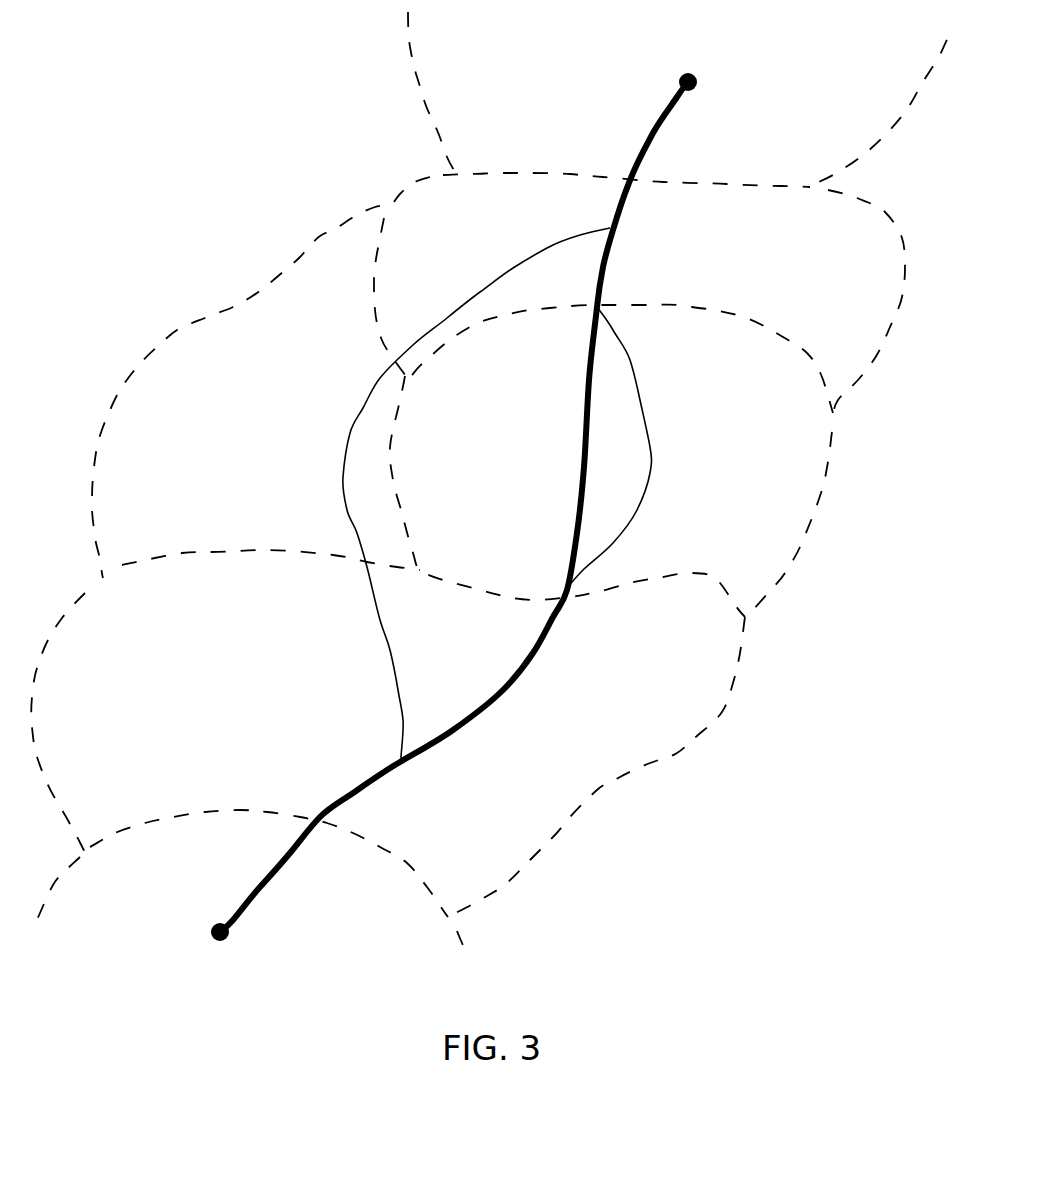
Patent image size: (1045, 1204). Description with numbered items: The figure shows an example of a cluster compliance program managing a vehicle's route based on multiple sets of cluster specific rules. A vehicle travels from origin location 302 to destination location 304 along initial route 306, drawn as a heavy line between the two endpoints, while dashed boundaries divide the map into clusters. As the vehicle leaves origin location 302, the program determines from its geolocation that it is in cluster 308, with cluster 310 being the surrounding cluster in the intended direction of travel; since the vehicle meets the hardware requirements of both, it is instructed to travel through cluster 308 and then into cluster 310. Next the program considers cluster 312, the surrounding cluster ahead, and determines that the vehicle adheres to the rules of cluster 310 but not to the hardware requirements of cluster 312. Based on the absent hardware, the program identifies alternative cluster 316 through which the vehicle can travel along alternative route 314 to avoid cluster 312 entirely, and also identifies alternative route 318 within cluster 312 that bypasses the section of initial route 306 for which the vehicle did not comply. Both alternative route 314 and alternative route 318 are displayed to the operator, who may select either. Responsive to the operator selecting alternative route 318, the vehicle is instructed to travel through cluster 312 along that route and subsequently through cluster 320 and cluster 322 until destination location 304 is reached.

The origin location 302 is at (220, 941).
The destination location 304 is at (690, 73).
The initial route 306 is at (503, 689).
The cluster 308 is at (367, 917).
The cluster 310 is at (509, 812).
The cluster 312 is at (760, 486).
The alternative route 314 is at (380, 634).
The alternative cluster 316 is at (268, 418).
The alternative route 318 is at (639, 392).
The cluster 320 is at (818, 261).
The cluster 322 is at (548, 101).